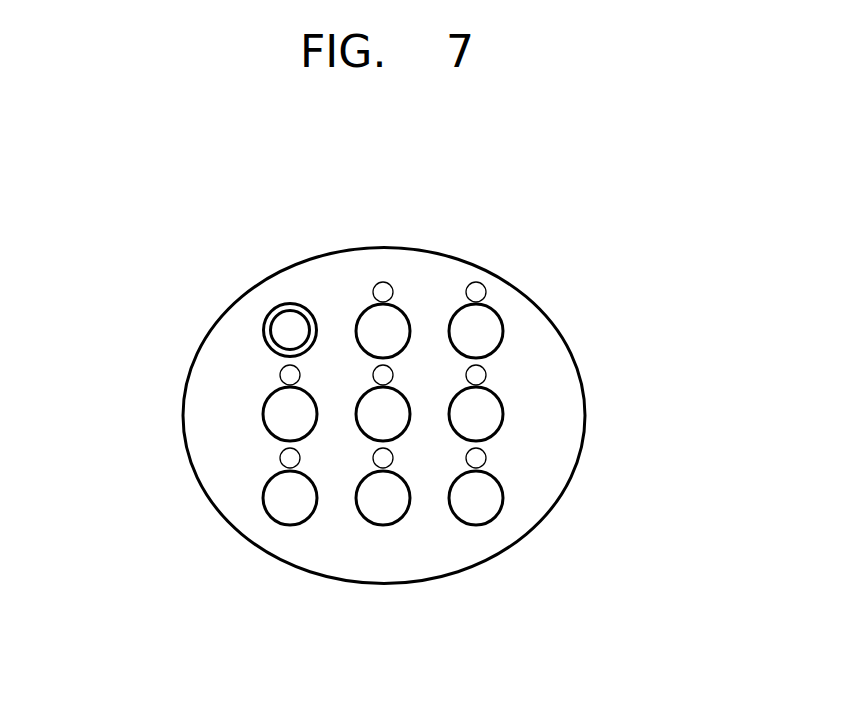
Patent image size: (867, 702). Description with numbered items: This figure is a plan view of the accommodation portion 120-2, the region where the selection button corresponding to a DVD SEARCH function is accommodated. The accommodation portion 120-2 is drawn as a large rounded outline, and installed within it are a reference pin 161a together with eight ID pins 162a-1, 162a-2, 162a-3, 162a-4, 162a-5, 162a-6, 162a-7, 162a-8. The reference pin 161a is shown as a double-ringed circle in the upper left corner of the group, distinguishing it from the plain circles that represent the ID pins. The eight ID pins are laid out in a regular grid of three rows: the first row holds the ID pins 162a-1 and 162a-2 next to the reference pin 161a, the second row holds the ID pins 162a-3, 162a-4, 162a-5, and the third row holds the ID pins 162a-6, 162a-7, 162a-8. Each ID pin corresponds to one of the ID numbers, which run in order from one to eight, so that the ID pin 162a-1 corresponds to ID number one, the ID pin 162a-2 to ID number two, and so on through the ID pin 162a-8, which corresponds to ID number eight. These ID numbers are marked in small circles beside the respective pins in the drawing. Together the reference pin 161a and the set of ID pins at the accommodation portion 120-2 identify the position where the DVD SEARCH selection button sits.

The accommodation portion 120-2 is at (343, 258).
The reference pin 161a is at (282, 316).
The ID pin 162a-1 is at (395, 312).
The ID pin 162a-2 is at (483, 318).
The ID pin 162a-3 is at (272, 410).
The ID pin 162a-4 is at (395, 428).
The ID pin 162a-5 is at (500, 402).
The ID pin 162a-6 is at (273, 505).
The ID pin 162a-7 is at (367, 512).
The ID pin 162a-8 is at (490, 498).